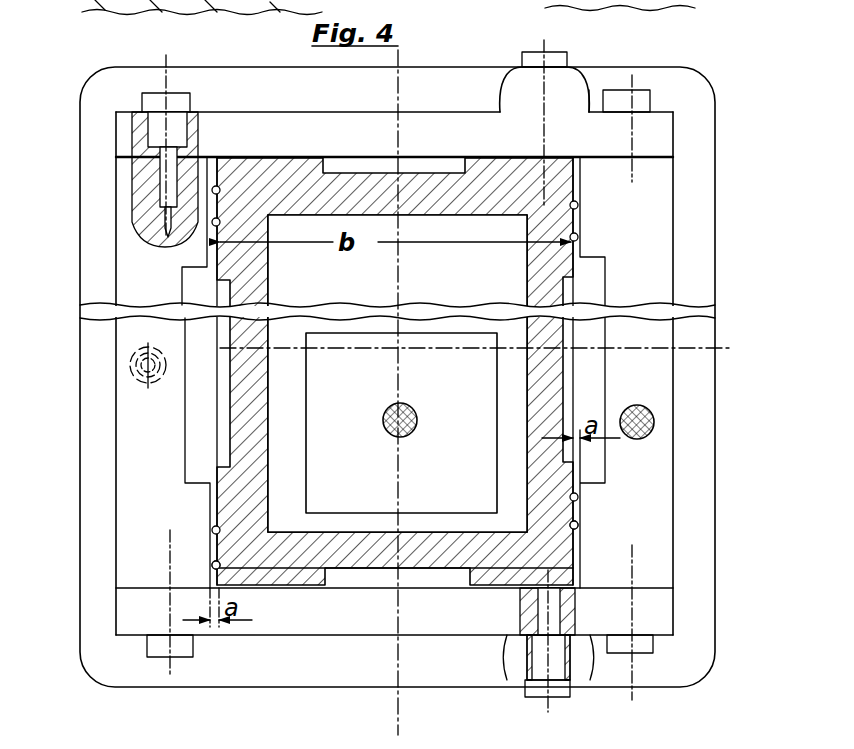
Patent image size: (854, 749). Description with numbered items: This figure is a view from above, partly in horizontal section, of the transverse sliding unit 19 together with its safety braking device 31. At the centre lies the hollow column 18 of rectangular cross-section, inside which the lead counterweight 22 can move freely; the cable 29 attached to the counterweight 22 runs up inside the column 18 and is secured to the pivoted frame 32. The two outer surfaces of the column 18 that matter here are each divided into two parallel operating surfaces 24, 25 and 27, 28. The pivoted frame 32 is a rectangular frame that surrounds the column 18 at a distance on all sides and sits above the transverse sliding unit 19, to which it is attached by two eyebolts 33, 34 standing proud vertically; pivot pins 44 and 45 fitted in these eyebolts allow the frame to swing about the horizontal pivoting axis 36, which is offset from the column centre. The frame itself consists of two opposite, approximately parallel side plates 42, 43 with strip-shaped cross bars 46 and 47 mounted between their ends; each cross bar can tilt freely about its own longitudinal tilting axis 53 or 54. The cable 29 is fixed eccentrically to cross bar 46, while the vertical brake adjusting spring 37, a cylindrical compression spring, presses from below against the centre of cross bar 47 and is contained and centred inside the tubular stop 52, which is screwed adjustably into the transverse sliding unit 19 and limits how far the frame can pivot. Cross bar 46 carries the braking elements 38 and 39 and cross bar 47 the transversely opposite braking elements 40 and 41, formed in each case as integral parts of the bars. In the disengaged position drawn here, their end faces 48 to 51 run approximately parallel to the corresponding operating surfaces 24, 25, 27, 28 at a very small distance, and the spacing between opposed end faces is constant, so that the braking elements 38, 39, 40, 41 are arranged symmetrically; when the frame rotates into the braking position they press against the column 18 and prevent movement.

The column 18 is at (367, 217).
The transverse sliding unit 19 is at (703, 207).
The counterweight 22 is at (450, 334).
The operating surface 24 is at (572, 186).
The operating surface 25 is at (578, 502).
The operating surface 27 is at (228, 160).
The operating surface 28 is at (270, 521).
The cable 29 is at (418, 418).
The safety braking device 31 is at (628, 190).
The pivoted frame 32 is at (228, 112).
The eyebolt 33 is at (587, 85).
The eyebolt 34 is at (586, 652).
The pivoting axis 36 is at (533, 60).
The brake adjusting spring 37 is at (183, 365).
The braking element 38 is at (615, 252).
The braking element 39 is at (618, 559).
The braking element 40 is at (208, 254).
The braking element 41 is at (206, 529).
The side plate 42 is at (460, 146).
The side plate 43 is at (365, 623).
The pivot pin 44 is at (560, 63).
The pivot pin 45 is at (540, 662).
The cross bar 46 is at (770, 254).
The cross bar 47 is at (137, 275).
The end face 48 is at (577, 222).
The end face 49 is at (580, 525).
The end face 50 is at (217, 232).
The end face 51 is at (215, 567).
The stop 52 is at (130, 383).
The tilting axis 53 is at (632, 80).
The tilting axis 54 is at (140, 103).